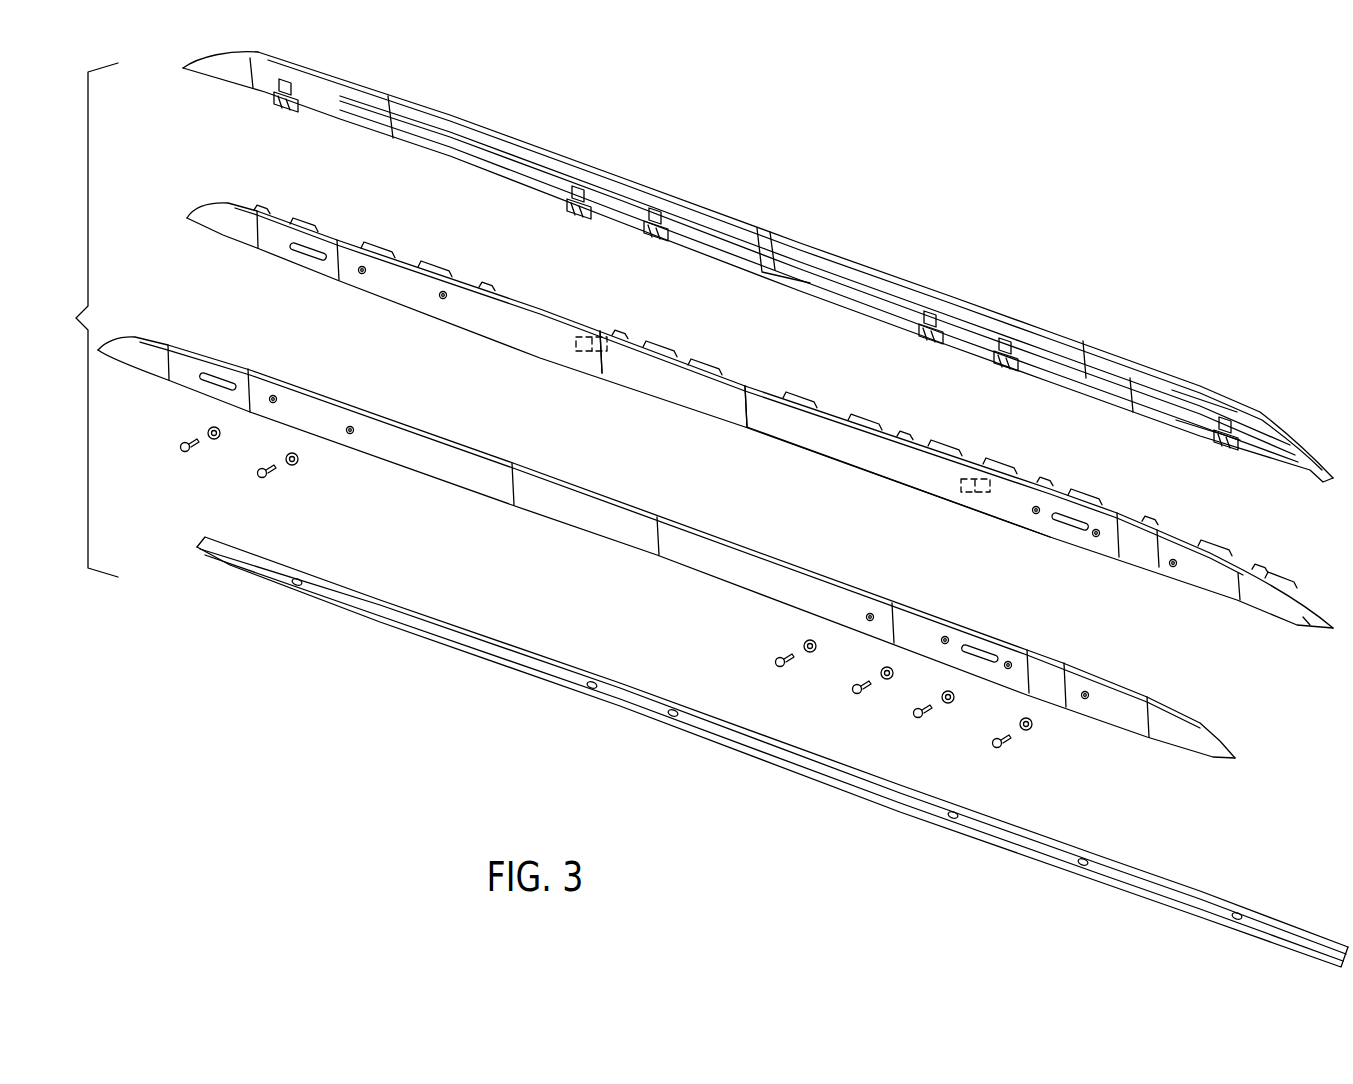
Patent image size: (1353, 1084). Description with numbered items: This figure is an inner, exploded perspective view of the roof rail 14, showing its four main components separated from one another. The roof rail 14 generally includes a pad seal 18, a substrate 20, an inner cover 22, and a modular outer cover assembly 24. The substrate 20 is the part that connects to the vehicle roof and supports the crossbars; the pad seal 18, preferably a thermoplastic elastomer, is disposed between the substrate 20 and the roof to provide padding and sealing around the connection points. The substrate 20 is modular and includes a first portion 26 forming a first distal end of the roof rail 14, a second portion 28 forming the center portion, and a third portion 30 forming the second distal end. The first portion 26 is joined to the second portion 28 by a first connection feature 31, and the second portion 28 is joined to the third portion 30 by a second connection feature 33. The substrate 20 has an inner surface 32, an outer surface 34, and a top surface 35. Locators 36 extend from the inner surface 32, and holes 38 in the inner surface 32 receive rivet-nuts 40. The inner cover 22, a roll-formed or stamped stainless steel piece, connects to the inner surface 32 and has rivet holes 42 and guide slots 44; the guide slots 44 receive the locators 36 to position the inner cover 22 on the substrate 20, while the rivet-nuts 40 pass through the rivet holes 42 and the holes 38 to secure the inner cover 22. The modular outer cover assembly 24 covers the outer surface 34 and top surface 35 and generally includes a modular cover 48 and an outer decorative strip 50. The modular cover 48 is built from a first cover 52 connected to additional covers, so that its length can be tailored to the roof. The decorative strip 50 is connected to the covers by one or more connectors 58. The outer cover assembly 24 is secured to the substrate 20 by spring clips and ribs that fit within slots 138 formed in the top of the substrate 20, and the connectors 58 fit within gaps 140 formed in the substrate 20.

The roof rail 14 is at (84, 320).
The pad seal 18 is at (1225, 908).
The substrate 20 is at (739, 379).
The inner cover 22 is at (666, 541).
The modular outer cover assembly 24 is at (758, 259).
The first portion 26 is at (225, 205).
The second portion 28 is at (667, 380).
The third portion 30 is at (1298, 596).
The first connection feature 31 is at (578, 345).
The inner surface 32 is at (813, 432).
The second connection feature 33 is at (955, 487).
The outer surface 34 is at (866, 407).
The top surface 35 is at (700, 366).
The locators 36 is at (292, 256).
The holes 38 is at (440, 298).
The rivet-nuts 40 is at (1050, 727).
The rivet holes 42 is at (348, 430).
The guide slots 44 is at (205, 375).
The modular cover 48 is at (818, 253).
The outer decorative strip 50 is at (773, 252).
The first cover 52 is at (440, 118).
The connectors 58 is at (270, 88).
The slots 138 is at (258, 210).
The gaps 140 is at (302, 226).